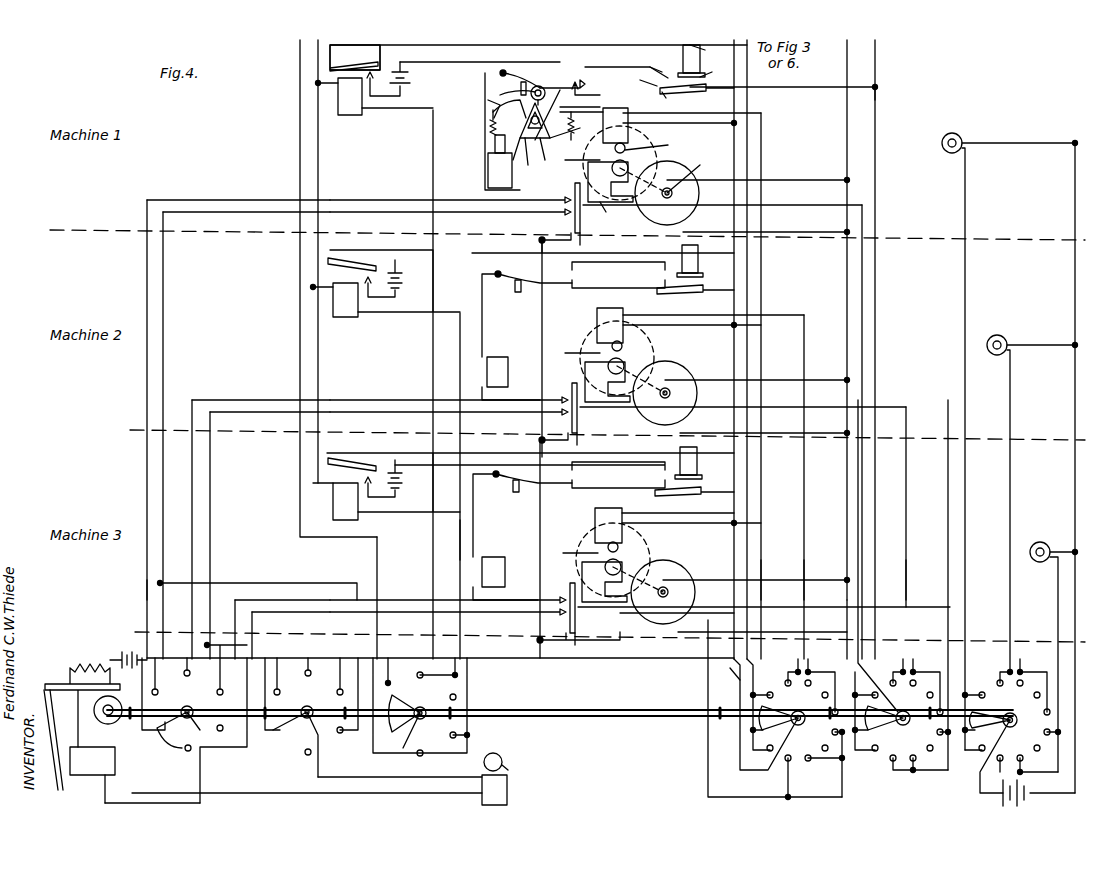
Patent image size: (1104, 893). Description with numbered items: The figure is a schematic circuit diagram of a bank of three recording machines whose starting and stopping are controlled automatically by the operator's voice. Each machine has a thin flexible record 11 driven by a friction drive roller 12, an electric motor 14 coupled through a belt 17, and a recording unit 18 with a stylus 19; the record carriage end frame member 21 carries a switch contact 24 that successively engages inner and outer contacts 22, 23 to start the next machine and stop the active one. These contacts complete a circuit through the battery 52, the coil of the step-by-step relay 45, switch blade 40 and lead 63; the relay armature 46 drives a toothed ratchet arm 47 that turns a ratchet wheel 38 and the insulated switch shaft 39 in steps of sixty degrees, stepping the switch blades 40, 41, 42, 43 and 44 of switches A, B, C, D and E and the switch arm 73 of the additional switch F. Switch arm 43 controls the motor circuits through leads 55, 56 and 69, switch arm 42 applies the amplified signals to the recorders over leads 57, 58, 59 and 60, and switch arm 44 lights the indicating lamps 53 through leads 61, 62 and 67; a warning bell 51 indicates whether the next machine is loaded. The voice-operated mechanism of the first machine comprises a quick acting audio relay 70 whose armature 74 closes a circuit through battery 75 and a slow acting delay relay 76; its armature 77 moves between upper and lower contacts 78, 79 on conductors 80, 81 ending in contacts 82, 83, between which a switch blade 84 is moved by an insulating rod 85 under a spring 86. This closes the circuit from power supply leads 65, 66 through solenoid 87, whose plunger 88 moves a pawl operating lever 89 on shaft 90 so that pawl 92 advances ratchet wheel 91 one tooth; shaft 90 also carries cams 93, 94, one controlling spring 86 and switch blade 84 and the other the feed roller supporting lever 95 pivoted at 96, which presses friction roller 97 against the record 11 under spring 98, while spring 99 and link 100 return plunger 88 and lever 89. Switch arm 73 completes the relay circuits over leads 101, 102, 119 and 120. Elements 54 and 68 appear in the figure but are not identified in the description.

The record 11 is at (655, 150).
The friction drive roller 12 is at (610, 182).
The electric motor 14 is at (683, 213).
The belt 17 is at (690, 172).
The recording unit 18 is at (615, 108).
The stylus 19 is at (657, 134).
The end frame member 21 is at (614, 213).
The inner contact 22 is at (560, 190).
The outer contact 23 is at (538, 245).
The switch contact 24 is at (581, 215).
The ratchet wheel 38 is at (118, 720).
The switch shaft 39 is at (545, 712).
The switch blade 40 is at (165, 742).
The switch blade 41 is at (290, 735).
The switch blade 42 is at (785, 705).
The switch blade 43 is at (895, 730).
The switch blade 44 is at (1000, 706).
The step-by-step relay 45 is at (88, 762).
The armature 46 is at (50, 770).
The toothed ratchet arm 47 is at (60, 684).
The warning bell 51 is at (507, 790).
The battery 52 is at (120, 650).
The lamp 53 is at (955, 133).
The battery 54 is at (1028, 805).
The lead 55 is at (858, 650).
The lead 56 is at (906, 570).
The lead 57 is at (761, 560).
The lead 58 is at (804, 565).
The lead 59 is at (720, 370).
The lead 60 is at (708, 41).
The lead 61 is at (965, 600).
The lead 62 is at (1010, 600).
The lead 63 is at (147, 578).
The power supply lead 65 is at (875, 62).
The power supply lead 66 is at (847, 55).
The lead 67 is at (1058, 620).
The conductor 68 is at (300, 583).
The lead 69 is at (948, 655).
The quick acting relay 70 is at (350, 100).
The switch arm 73 is at (410, 690).
The armature 74 is at (355, 57).
The battery 75 is at (408, 80).
The slow acting relay 76 is at (700, 58).
The armature 77 is at (700, 93).
The upper contact 78 is at (660, 65).
The lower contact 79 is at (682, 98).
The conductor 80 is at (622, 50).
The conductor 81 is at (647, 75).
The upper contact 82 is at (575, 52).
The lower contact 83 is at (580, 80).
The switch blade 84 is at (538, 86).
The insulating rod 85 is at (521, 88).
The spring 86 is at (505, 92).
The solenoid 87 is at (488, 175).
The plunger 88 is at (495, 145).
The pawl operating lever 89 is at (500, 105).
The shaft 90 is at (548, 110).
The ratchet wheel 91 is at (536, 165).
The pawl 92 is at (530, 50).
The cam 93 is at (523, 156).
The cam 94 is at (547, 132).
The feed roller supporting lever 95 is at (570, 145).
The pivot 96 is at (574, 126).
The friction roller 97 is at (628, 145).
The spring 98 is at (585, 103).
The spring 99 is at (488, 110).
The link 100 is at (490, 128).
The lead 101 is at (460, 565).
The lead 102 is at (377, 570).
The lead 119 is at (300, 48).
The lead 120 is at (318, 45).
The switch A is at (214, 735).
The switch B is at (334, 748).
The switch C is at (821, 758).
The switch D is at (882, 765).
The switch E is at (977, 766).
The switch F is at (409, 758).